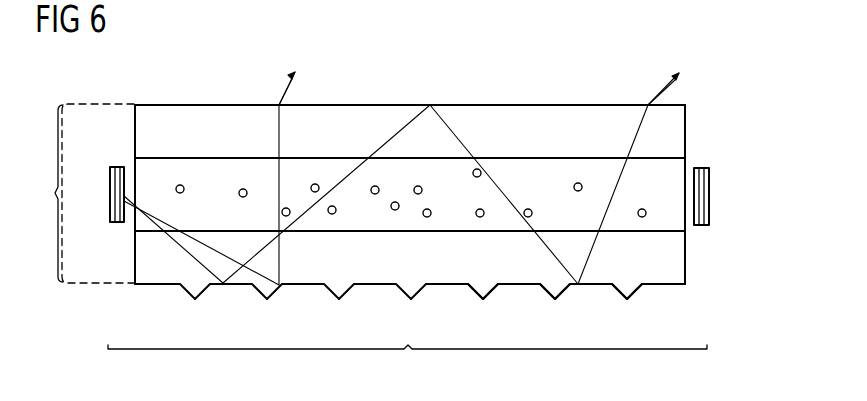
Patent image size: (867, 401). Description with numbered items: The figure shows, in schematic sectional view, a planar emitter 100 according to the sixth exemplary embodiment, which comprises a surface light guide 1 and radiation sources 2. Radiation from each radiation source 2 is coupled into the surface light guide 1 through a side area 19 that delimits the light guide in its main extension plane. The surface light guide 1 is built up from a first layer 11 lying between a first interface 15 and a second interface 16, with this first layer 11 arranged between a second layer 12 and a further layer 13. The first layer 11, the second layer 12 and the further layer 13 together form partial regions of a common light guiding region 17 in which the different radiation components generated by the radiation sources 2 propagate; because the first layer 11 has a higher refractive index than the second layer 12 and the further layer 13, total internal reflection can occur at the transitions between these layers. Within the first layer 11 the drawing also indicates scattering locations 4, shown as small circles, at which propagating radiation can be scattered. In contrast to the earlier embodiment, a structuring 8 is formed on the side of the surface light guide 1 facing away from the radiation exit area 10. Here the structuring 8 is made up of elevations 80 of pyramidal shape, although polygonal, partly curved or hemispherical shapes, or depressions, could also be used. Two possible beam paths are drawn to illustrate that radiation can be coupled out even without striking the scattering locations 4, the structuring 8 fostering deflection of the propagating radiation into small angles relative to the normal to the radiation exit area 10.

The surface light guide 1 is at (642, 76).
The radiation source 2 is at (109, 193).
The scattering particles 4 is at (186, 190).
The structuring 8 is at (630, 298).
The radiation exit area 10 is at (559, 104).
The first layer 11 is at (686, 232).
The second layer 12 is at (345, 112).
The further layer 13 is at (678, 270).
The first interface 15 is at (488, 104).
The second interface 16 is at (450, 287).
The light guiding region 17 is at (83, 193).
The side area 19 is at (131, 115).
The elevations 80 is at (491, 298).
The planar emitter 100 is at (407, 367).